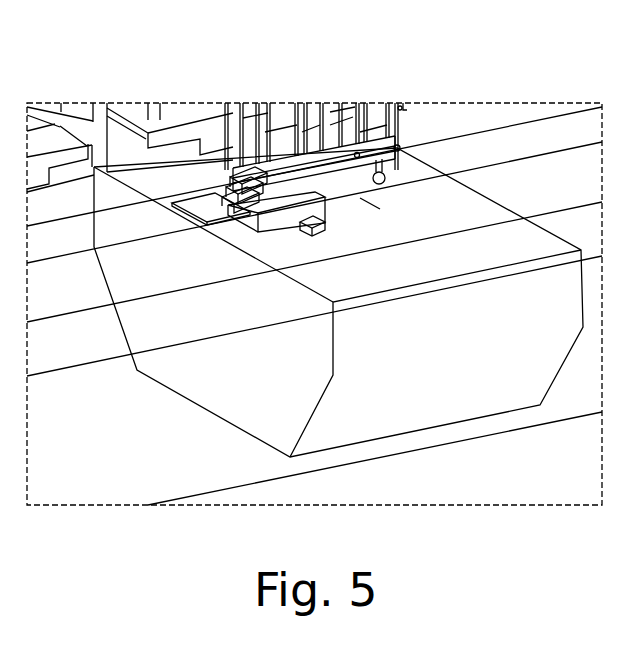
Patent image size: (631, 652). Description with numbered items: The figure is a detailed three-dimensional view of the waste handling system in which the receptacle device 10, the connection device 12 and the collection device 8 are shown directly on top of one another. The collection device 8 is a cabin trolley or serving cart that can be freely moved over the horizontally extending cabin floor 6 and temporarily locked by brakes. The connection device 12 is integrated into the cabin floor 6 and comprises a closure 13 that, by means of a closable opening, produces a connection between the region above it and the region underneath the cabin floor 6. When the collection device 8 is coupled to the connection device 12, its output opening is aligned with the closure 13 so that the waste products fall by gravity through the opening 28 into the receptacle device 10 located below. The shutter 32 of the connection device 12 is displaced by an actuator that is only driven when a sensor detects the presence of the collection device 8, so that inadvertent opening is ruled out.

The cabin floor 6 is at (516, 159).
The collection device 8 is at (323, 118).
The receptacle device 10 is at (259, 387).
The connection device 12 is at (215, 177).
The closure 13 is at (300, 236).
The opening 28 is at (366, 201).
The shutter 32 is at (178, 207).